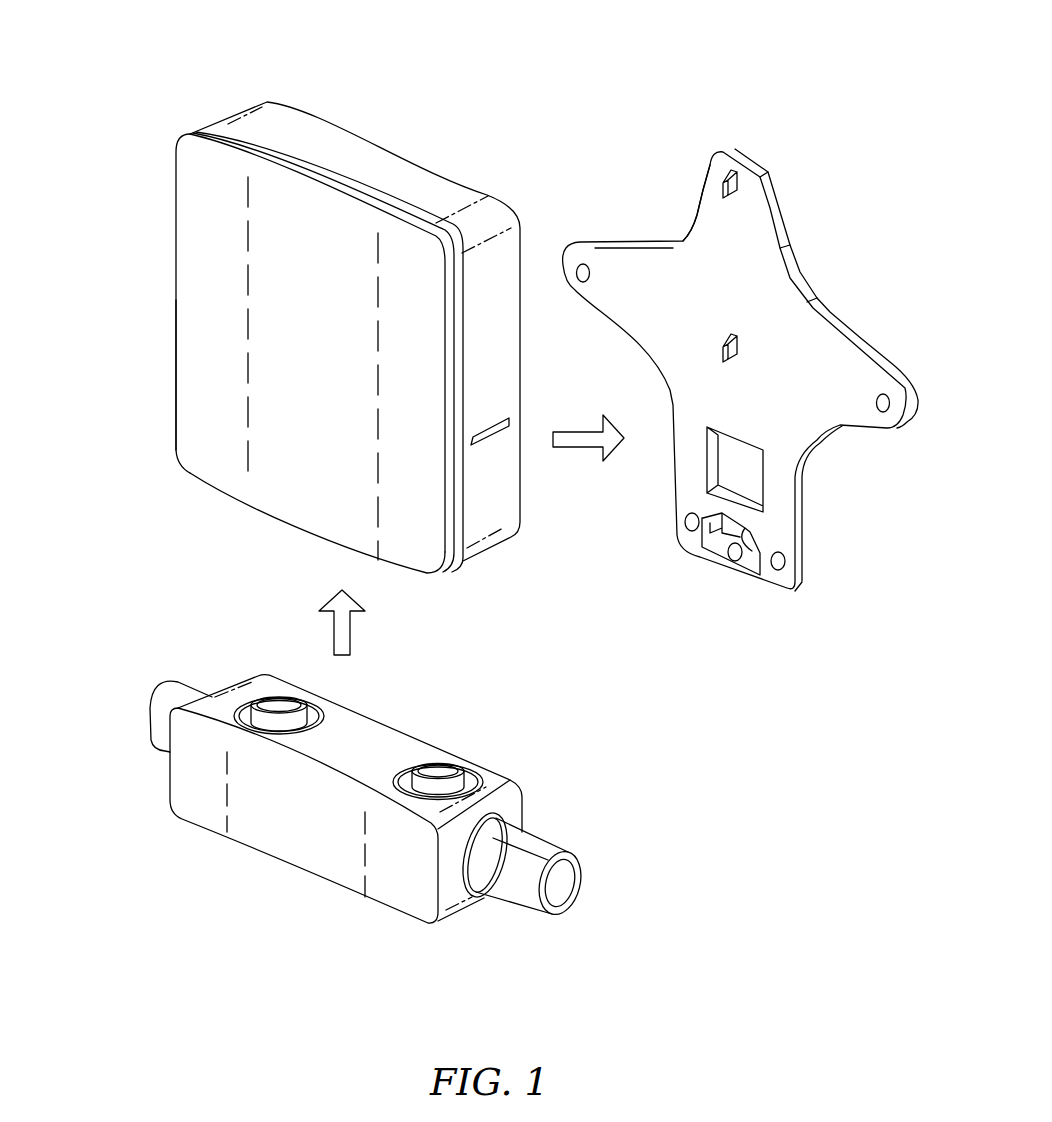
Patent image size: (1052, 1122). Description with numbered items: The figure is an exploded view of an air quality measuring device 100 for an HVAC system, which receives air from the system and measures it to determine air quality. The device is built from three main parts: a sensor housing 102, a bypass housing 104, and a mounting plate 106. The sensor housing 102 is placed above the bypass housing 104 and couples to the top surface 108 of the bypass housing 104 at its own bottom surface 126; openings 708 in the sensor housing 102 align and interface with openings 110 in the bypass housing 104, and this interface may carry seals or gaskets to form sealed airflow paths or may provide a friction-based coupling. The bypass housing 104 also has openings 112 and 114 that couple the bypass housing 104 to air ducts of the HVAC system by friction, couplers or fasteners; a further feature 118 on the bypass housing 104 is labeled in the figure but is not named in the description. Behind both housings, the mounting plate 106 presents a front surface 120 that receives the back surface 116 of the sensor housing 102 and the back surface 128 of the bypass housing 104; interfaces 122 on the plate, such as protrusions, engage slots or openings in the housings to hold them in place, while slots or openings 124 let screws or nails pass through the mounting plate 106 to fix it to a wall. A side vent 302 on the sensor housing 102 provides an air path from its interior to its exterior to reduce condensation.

The air quality measuring device 100 is at (128, 35).
The sensor housing 102 is at (325, 157).
The bypass housing 104 is at (192, 818).
The mounting plate 106 is at (780, 292).
The top surface 108 is at (357, 745).
The openings 110 is at (277, 708).
The opening 112 is at (567, 898).
The opening 114 is at (160, 690).
The back surface 116 is at (445, 178).
The side surface of base 118 is at (523, 810).
The front surface 120 is at (708, 210).
The interfaces 122 is at (735, 178).
The slots or openings 124 is at (583, 264).
The bottom surface 126 is at (221, 484).
The back surface 128 is at (412, 742).
The side vent 302 is at (487, 430).
The openings 708 is at (263, 508).